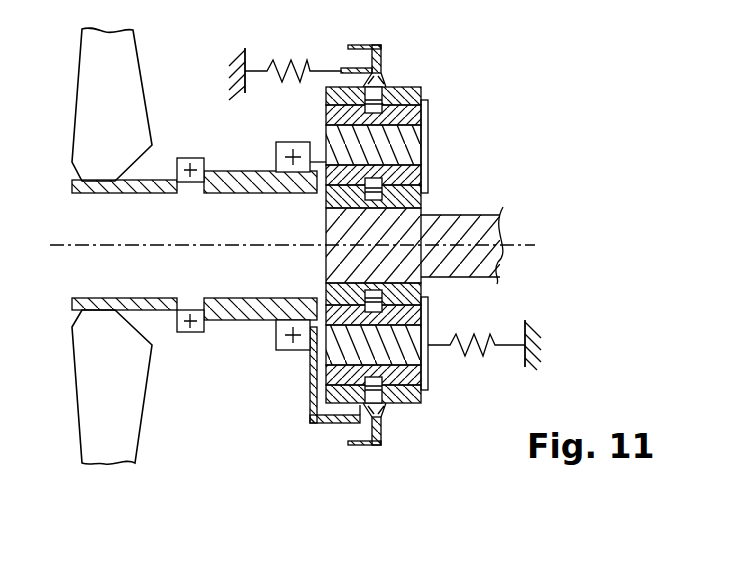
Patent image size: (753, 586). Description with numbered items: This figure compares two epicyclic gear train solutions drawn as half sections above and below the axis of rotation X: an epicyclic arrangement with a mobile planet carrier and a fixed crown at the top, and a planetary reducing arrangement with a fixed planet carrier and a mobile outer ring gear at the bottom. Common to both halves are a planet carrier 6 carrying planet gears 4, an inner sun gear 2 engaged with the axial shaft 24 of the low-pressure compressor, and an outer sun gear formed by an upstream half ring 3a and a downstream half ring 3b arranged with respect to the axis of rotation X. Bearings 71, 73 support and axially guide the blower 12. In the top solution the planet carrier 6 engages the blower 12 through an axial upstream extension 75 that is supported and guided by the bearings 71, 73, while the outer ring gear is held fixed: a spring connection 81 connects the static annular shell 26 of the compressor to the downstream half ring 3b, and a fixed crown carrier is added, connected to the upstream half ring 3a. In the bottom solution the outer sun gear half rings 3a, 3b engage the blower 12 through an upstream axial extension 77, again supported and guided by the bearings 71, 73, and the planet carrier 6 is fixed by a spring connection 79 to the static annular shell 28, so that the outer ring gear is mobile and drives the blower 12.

The axis of rotation X is at (62, 245).
The blower 12 is at (97, 132).
The axial upstream extension 75 is at (78, 186).
The upstream axial extension 77 is at (245, 320).
The bearing 71 is at (193, 178).
The bearing 73 is at (276, 163).
The static annular shell 26 is at (227, 67).
The spring connection 81 is at (304, 67).
The upstream half ring 3a is at (340, 92).
The downstream half ring 3b is at (405, 90).
The planet gear 4 is at (430, 112).
The planet carrier 6 is at (403, 155).
The inner sun gear 2 is at (327, 200).
The axial shaft 24 is at (488, 235).
The spring connection 79 is at (495, 335).
The static annular shell 28 is at (543, 353).